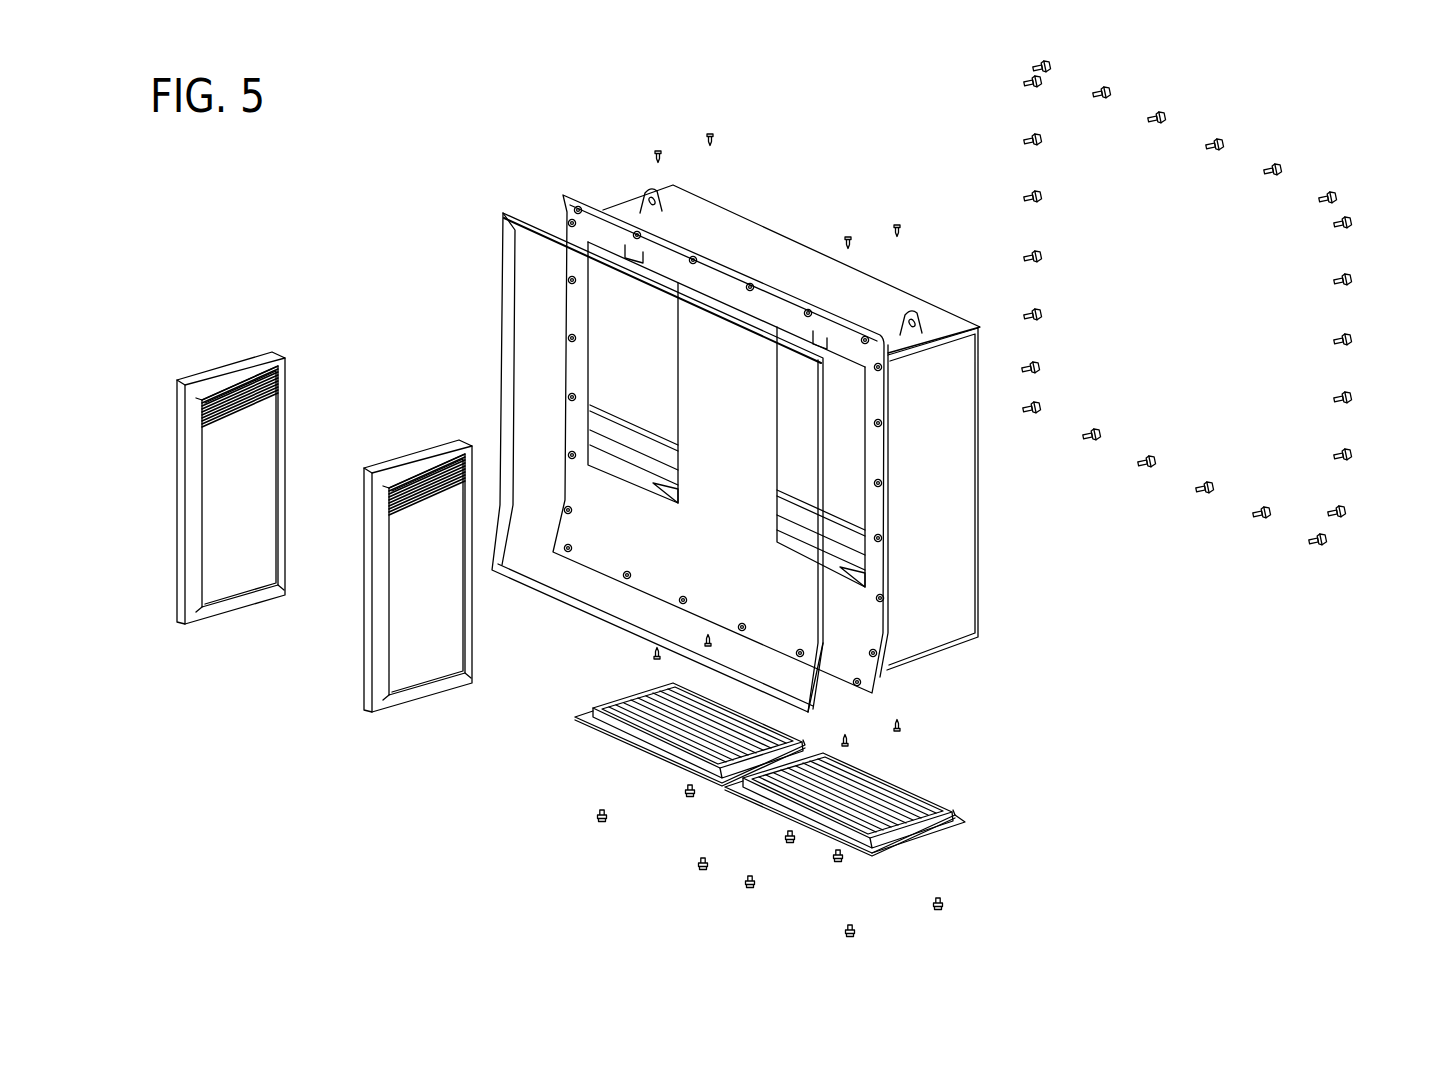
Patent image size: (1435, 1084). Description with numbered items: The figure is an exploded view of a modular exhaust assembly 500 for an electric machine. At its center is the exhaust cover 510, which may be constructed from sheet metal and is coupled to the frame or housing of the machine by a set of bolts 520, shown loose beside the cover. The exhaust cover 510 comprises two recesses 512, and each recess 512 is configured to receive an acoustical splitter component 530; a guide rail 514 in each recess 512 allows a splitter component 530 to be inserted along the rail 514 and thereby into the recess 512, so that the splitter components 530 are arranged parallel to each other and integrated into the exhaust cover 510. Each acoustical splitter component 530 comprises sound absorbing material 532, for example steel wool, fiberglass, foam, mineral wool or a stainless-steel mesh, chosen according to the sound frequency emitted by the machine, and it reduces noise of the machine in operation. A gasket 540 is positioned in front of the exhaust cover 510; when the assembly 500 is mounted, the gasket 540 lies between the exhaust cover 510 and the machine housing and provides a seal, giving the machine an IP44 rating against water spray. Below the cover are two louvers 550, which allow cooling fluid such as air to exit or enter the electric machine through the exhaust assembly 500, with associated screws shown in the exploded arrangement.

The modular exhaust assembly 500 is at (396, 200).
The exhaust cover 510 is at (947, 528).
The recess 512 is at (637, 333).
The guide rail 514 is at (660, 468).
The bolts 520 is at (1157, 116).
The acoustical splitter component 530 is at (228, 366).
The sound absorbing material 532 is at (237, 502).
The gasket 540 is at (503, 313).
The louver 550 is at (637, 748).